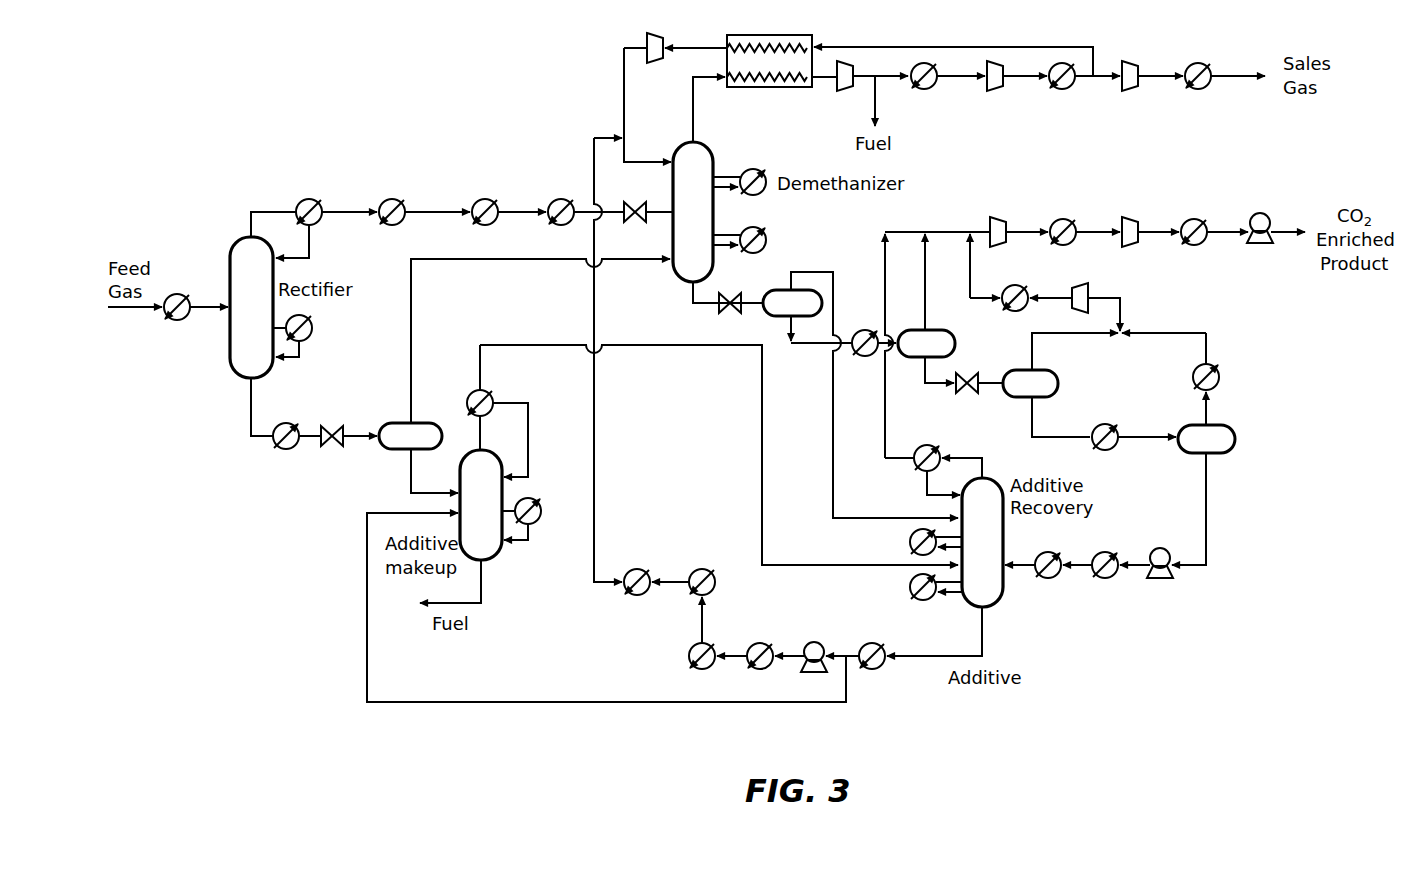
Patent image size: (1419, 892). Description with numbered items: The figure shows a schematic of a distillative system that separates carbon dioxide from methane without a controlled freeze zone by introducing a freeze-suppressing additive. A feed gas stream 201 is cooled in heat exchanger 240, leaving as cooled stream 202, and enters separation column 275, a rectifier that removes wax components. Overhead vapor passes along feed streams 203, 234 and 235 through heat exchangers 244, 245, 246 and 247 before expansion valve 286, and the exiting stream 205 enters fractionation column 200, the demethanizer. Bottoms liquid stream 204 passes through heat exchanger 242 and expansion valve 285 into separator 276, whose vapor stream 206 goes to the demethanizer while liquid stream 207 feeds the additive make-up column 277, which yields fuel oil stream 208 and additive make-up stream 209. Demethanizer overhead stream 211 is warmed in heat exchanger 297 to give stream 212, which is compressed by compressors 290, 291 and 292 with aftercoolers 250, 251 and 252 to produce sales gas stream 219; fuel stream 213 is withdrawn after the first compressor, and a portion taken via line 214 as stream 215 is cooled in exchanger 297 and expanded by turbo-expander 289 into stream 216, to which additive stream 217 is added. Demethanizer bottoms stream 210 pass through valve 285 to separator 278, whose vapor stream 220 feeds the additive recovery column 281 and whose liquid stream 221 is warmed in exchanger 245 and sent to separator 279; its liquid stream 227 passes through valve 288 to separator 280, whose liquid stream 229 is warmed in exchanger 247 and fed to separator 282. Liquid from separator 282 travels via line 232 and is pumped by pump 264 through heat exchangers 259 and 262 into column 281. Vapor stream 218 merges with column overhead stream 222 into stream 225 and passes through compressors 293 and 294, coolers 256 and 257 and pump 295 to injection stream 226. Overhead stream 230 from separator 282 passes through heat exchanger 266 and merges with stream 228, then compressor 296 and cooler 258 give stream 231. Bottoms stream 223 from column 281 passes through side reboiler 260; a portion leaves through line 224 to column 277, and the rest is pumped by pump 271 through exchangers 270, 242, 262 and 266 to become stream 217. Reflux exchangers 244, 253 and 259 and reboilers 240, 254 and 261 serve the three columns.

The fractionation column 200 is at (674, 270).
The feed gas stream 201 is at (110, 312).
The cooled feed stream 202 is at (212, 312).
The feed stream 203 is at (336, 222).
The stream 204 is at (251, 422).
The stream 205 is at (662, 220).
The stream 206 is at (411, 296).
The liquid stream 207 is at (411, 493).
The fuel oil stream 208 is at (481, 588).
The additive make-up stream 209 is at (704, 346).
The demethanizer bottoms stream 210 is at (693, 297).
The overhead vapor stream 211 is at (693, 114).
The warmed vapor stream 212 is at (828, 85).
The fuel stream 213 is at (877, 110).
The recycle gas stream 214 is at (1097, 68).
The stream 215 is at (879, 47).
The expanded stream 216 is at (621, 114).
The stream 217 is at (589, 153).
The vapor stream 218 is at (945, 292).
The residue gas stream 219 is at (1235, 60).
The flash vapor stream 220 is at (805, 267).
The stream 221 is at (827, 346).
The vapor stream 222 is at (876, 420).
The additive bottoms stream 223 is at (921, 654).
The line 224 is at (846, 690).
The CO2 product vapor stream 225 is at (985, 232).
The stream 226 is at (1283, 235).
The separator liquid stream 227 is at (947, 386).
The stream 228 is at (1043, 343).
The stream 229 is at (1052, 439).
The stream 230 is at (1210, 416).
The stream 231 is at (988, 273).
The separator bottoms stream 232 is at (1206, 508).
The cooled overhead stream 234 is at (428, 222).
The feed stream 235 is at (506, 222).
The heat exchanger 240 is at (178, 294).
The heat exchanger 242 is at (285, 420).
The heat exchanger 244 is at (305, 200).
The heat exchanger 245 is at (380, 200).
The heat exchanger 246 is at (472, 200).
The heat exchanger 247 is at (547, 200).
The aftercooler 250 is at (931, 92).
The aftercooler 251 is at (1069, 92).
The aftercooler 252 is at (1204, 92).
The heat exchanger 253 is at (470, 402).
The heat exchanger 254 is at (538, 516).
The cooler 256 is at (1072, 222).
The cooler 257 is at (1202, 222).
The cooler 258 is at (1015, 289).
The heat exchanger 259 is at (927, 444).
The heat exchanger 260 is at (910, 544).
The heat exchanger 261 is at (910, 597).
The heat exchanger 262 is at (1042, 550).
The pump 264 is at (1152, 550).
The heat exchanger 266 is at (1192, 380).
The heat exchanger 270 is at (747, 640).
The pump 271 is at (812, 640).
The separation column 275 is at (229, 263).
The separator 276 is at (390, 419).
The separation column 277 is at (460, 478).
The separator 278 is at (774, 292).
The separator 279 is at (952, 338).
The separator 280 is at (1056, 384).
The separation column 281 is at (1002, 594).
The separator 282 is at (1233, 446).
The expansion valve 285 is at (333, 450).
The expansion valve 286 is at (642, 200).
The expansion valve 288 is at (971, 374).
The turbo-expander 289 is at (658, 40).
The compressor 290 is at (843, 91).
The compressor 291 is at (990, 92).
The compressor 292 is at (1127, 92).
The compressor 293 is at (1007, 218).
The compressor 294 is at (1135, 220).
The pump 295 is at (1267, 220).
The compressor 296 is at (1087, 285).
The heat exchanger 297 is at (755, 36).